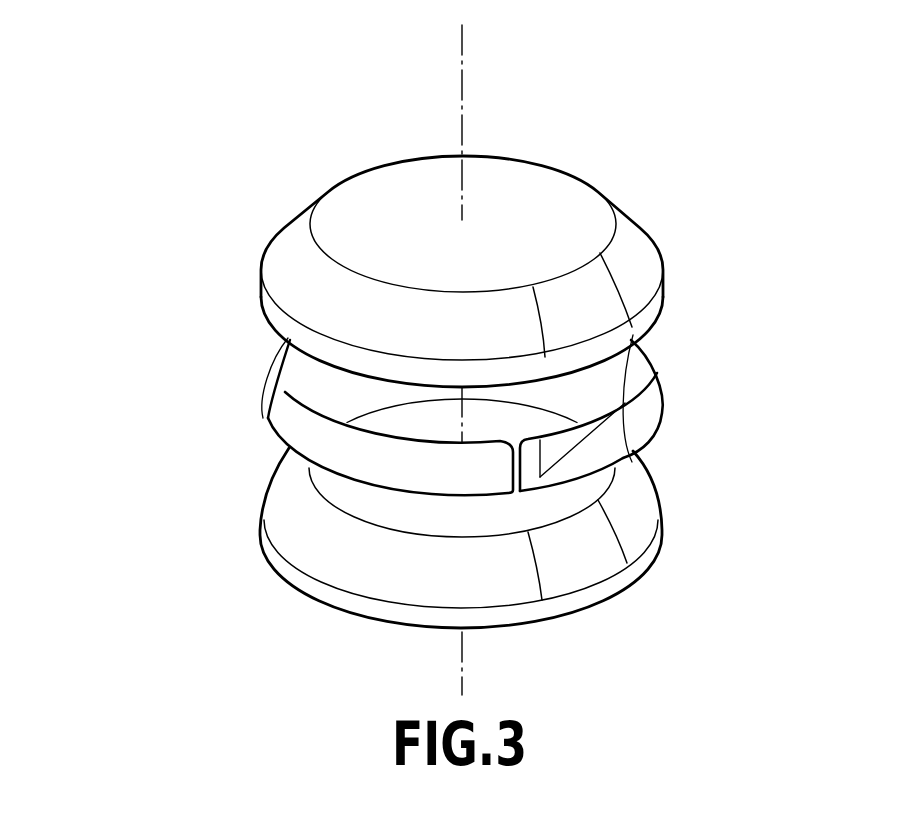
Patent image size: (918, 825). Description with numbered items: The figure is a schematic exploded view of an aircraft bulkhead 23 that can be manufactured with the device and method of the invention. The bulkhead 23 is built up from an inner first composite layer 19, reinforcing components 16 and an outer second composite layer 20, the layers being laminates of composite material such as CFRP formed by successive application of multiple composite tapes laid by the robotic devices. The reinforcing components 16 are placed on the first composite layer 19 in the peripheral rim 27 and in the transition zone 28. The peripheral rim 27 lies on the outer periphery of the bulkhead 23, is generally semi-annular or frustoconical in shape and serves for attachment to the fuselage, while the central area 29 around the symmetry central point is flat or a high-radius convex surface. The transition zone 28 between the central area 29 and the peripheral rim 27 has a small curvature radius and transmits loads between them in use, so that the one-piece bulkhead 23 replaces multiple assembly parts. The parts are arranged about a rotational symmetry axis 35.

The reinforcing components 16 is at (310, 425).
The inner first composite layer 19 is at (553, 518).
The outer second composite layer 20 is at (429, 233).
The aircraft bulkhead 23 is at (520, 143).
The peripheral rim 27 is at (283, 316).
The transition zone 28 is at (292, 270).
The central area 29 is at (367, 193).
The rotational symmetry axis 35 is at (462, 90).